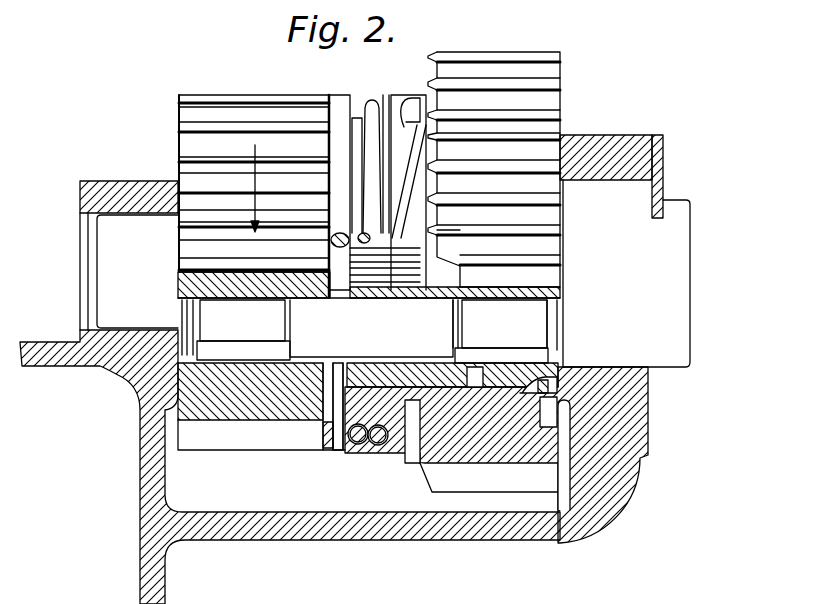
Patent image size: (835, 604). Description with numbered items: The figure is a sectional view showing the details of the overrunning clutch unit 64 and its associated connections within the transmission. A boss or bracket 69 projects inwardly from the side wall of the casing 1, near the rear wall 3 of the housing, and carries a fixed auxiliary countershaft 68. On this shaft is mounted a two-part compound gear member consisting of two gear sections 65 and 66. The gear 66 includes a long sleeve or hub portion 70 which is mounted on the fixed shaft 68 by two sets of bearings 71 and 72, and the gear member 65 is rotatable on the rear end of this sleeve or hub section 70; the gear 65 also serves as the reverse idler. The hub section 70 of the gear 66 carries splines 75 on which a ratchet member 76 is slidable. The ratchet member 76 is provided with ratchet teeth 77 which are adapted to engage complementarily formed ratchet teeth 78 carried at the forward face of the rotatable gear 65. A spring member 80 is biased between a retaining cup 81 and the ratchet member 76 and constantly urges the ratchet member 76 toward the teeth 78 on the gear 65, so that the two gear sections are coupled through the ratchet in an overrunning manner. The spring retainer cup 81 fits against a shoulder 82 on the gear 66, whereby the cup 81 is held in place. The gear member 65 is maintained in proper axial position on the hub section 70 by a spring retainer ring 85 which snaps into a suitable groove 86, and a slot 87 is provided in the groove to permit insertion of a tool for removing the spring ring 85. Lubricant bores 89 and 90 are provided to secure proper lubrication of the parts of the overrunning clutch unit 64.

The casing 1 is at (97, 374).
The rear wall 3 is at (598, 135).
The overrunning clutch unit 64 is at (175, 106).
The gear section 65 is at (513, 60).
The gear section 66 is at (232, 98).
The auxiliary countershaft 68 is at (107, 315).
The boss or bracket 69 is at (74, 207).
The sleeve or hub portion 70 is at (377, 373).
The bearings 71 is at (238, 352).
The bearings 72 is at (486, 352).
The splines 75 is at (360, 370).
The ratchet member 76 is at (395, 100).
The ratchet teeth 77 is at (417, 178).
The ratchet teeth 78 is at (403, 127).
The spring member 80 is at (370, 100).
The retaining cup 81 is at (340, 450).
The shoulder 82 is at (321, 423).
The spring retainer ring 85 is at (560, 411).
The groove 86 is at (532, 375).
The slot 87 is at (562, 385).
The lubricant bore 89 is at (428, 360).
The lubricant bore 90 is at (307, 358).